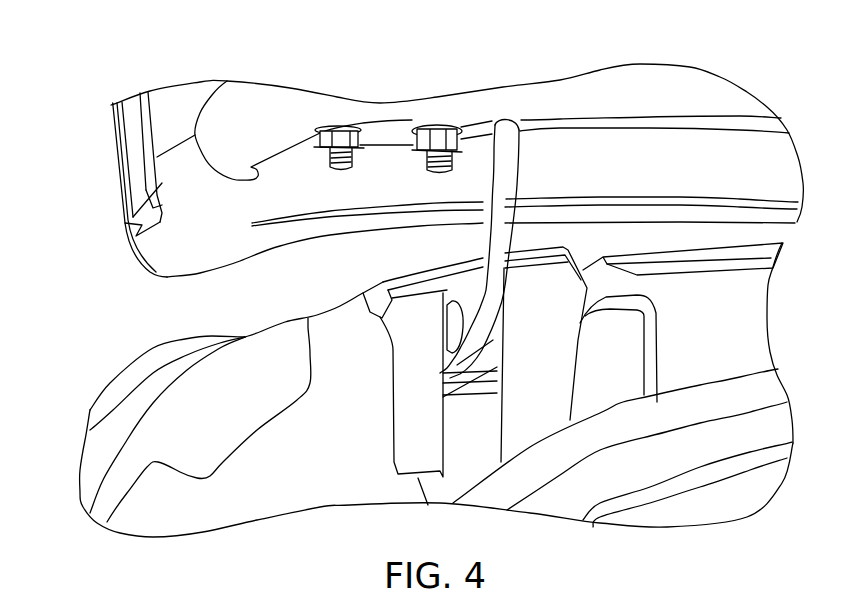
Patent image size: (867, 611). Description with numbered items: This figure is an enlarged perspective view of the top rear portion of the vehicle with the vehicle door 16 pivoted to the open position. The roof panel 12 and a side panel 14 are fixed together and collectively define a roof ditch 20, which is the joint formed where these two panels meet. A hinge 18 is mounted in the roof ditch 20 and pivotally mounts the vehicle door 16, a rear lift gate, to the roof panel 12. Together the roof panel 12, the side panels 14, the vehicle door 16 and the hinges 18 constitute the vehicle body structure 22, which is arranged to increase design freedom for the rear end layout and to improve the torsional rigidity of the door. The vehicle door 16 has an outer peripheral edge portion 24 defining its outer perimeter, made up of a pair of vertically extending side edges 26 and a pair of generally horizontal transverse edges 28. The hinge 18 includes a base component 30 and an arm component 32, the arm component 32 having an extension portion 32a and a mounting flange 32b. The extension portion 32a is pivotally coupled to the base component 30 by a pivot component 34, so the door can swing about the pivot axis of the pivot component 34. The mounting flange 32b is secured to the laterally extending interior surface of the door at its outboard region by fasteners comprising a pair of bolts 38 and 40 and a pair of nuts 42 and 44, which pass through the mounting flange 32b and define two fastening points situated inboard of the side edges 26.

The roof panel 12 is at (762, 243).
The side panel 14 is at (110, 452).
The vehicle door 16 is at (680, 88).
The hinge 18 is at (538, 160).
The roof ditch 20 is at (586, 250).
The vehicle body structure 22 is at (146, 312).
The outer peripheral edge portion 24 is at (106, 131).
The side edge 26 is at (127, 198).
The transverse edge 28 is at (298, 252).
The base component 30 is at (481, 377).
The arm component 32 is at (389, 146).
The extension portion 32a is at (488, 242).
The mounting flange 32b is at (377, 122).
The pivot component 34 is at (447, 331).
The bolt 38 is at (344, 172).
The bolt 40 is at (441, 174).
The nut 42 is at (337, 134).
The nut 44 is at (437, 132).